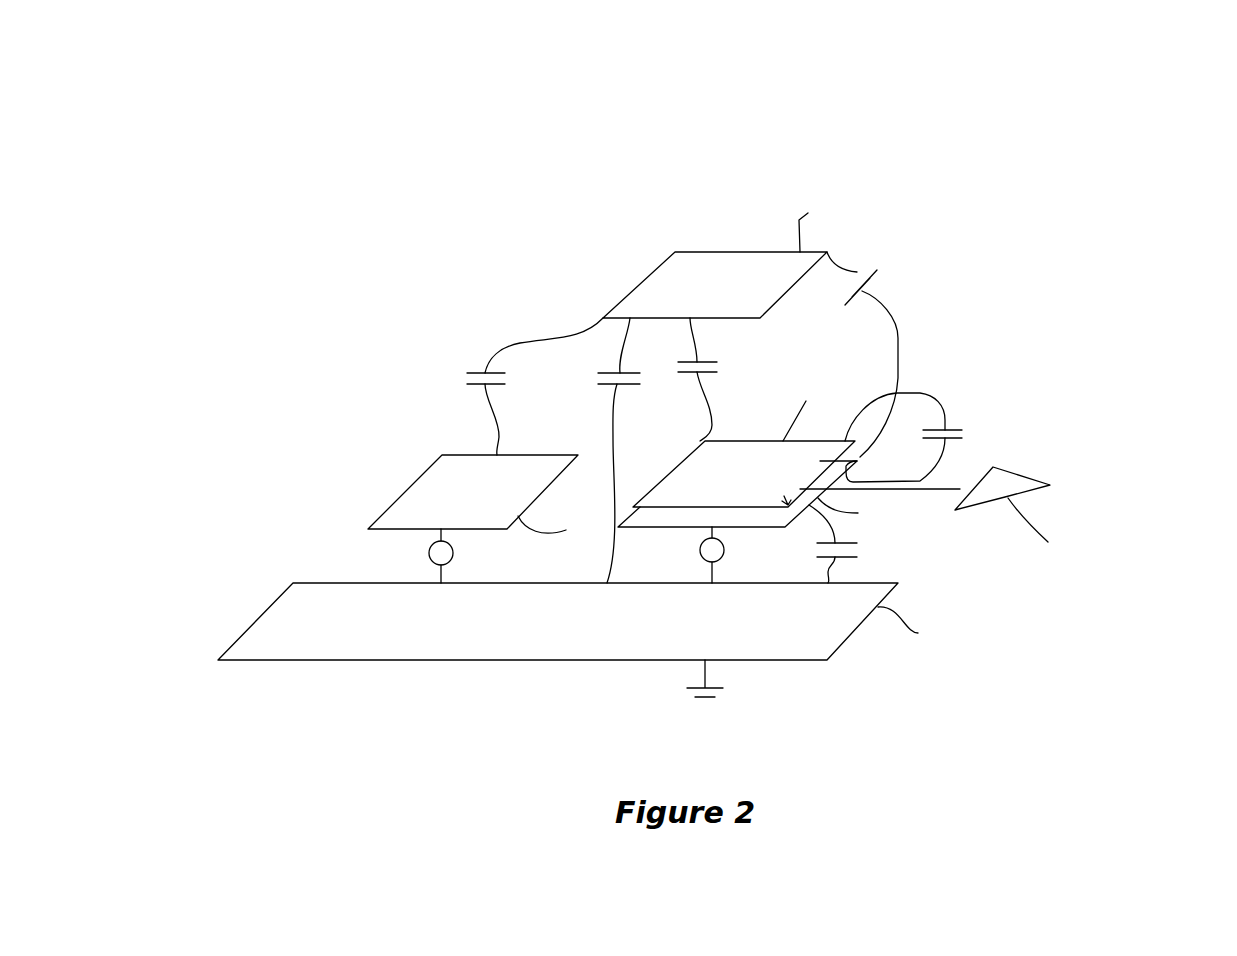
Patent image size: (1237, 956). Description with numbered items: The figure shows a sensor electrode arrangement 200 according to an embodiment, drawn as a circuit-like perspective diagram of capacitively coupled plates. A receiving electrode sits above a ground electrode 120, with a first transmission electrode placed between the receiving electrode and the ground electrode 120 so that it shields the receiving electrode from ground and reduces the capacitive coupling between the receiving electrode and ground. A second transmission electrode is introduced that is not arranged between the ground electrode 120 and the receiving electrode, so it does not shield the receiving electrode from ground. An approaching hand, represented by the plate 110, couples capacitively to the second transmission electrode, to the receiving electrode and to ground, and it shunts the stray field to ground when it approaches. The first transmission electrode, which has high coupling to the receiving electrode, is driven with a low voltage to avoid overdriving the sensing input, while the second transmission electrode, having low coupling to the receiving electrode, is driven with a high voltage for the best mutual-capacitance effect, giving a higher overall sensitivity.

The capacitive sensing system 200 is at (485, 120).
The hand electrode plate 110 is at (700, 252).
The ground electrode 120 is at (312, 583).